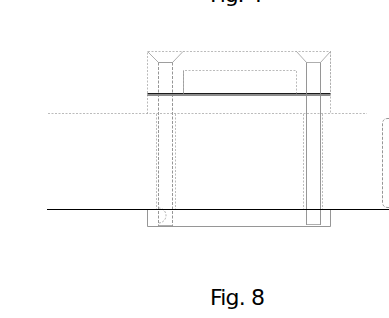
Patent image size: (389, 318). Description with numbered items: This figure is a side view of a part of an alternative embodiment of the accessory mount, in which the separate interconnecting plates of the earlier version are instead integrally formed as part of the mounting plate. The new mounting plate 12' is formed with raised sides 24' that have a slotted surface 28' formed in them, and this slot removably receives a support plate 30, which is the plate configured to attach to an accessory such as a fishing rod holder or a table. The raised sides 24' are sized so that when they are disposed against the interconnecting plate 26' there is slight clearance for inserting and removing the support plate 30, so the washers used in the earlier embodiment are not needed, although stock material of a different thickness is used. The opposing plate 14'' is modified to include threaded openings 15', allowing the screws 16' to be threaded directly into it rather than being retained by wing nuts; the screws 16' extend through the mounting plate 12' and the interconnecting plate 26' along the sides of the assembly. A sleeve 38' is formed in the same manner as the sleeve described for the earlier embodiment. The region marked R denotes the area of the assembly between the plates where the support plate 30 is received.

The mounting plate 12' is at (177, 115).
The plate 14'' is at (177, 243).
The threaded openings 15' is at (207, 228).
The screws 16' is at (182, 145).
The raised sides 24' is at (346, 52).
The interconnecting plate 26' is at (196, 141).
The slotted surface 28' is at (155, 31).
The support plate 30 is at (240, 82).
The sleeve 38' is at (94, 201).
The region R is at (208, 158).